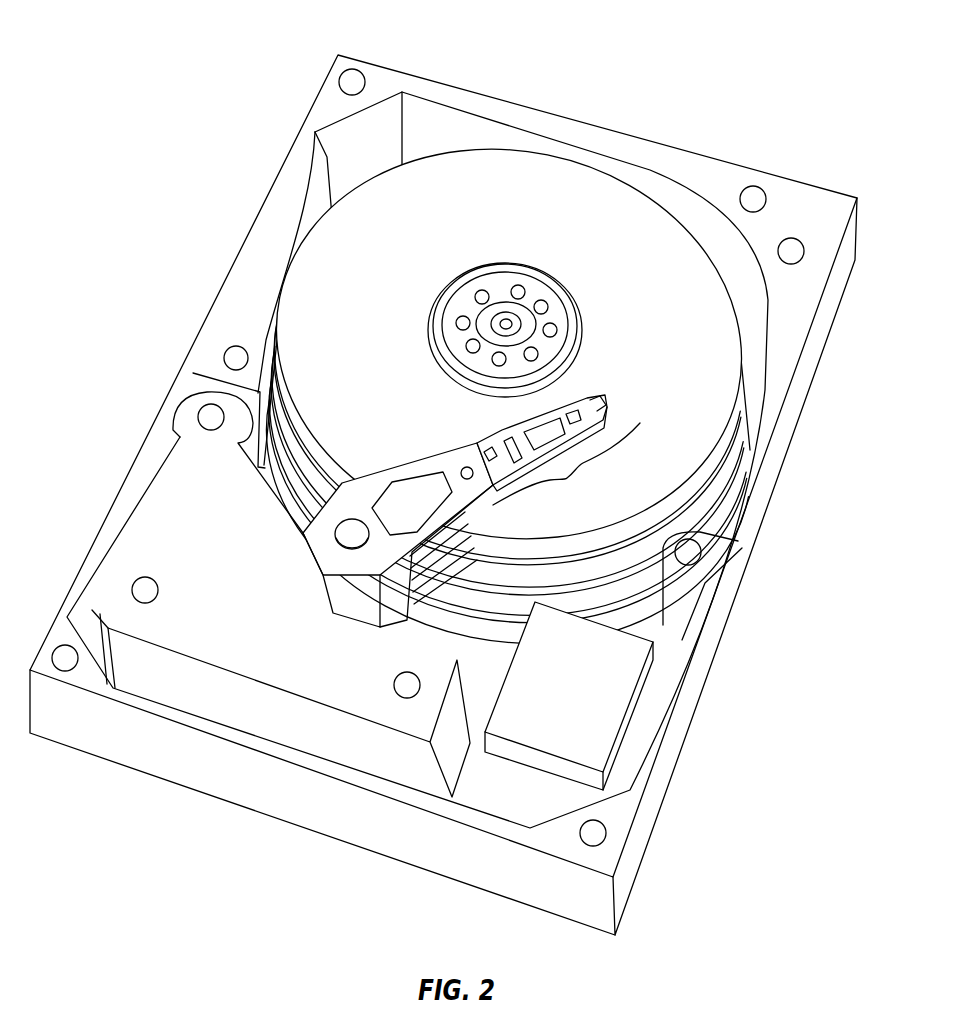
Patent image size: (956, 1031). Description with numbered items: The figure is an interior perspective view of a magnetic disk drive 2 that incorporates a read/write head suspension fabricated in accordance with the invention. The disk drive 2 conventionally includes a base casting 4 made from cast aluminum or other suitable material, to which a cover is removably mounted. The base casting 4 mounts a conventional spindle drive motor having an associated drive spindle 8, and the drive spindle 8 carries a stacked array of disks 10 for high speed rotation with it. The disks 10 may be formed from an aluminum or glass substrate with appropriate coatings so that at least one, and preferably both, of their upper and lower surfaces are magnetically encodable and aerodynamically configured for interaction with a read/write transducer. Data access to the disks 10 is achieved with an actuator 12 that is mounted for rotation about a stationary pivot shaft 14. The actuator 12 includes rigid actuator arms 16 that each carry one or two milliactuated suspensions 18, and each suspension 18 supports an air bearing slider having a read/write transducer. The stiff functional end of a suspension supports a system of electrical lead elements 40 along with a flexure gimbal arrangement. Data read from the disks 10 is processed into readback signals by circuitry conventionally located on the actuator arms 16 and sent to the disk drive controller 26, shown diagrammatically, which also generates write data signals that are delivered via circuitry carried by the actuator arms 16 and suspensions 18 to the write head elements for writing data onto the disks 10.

The disk drive 2 is at (245, 53).
The base casting 4 is at (823, 337).
The drive spindle 8 is at (506, 322).
The disks 10 is at (335, 253).
The actuator 12 is at (338, 597).
The pivot shaft 14 is at (350, 527).
The actuator arms 16 is at (433, 563).
The milliactuated suspensions 18 is at (566, 469).
The disk drive controller 26 is at (592, 632).
The electrical lead elements 40 is at (452, 432).